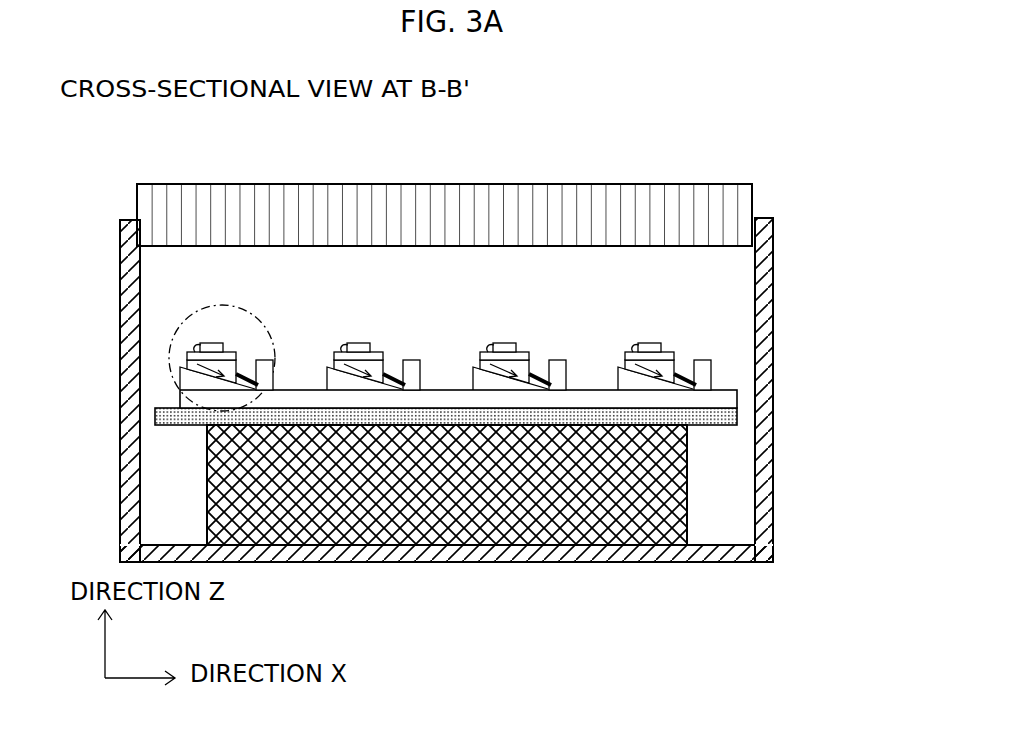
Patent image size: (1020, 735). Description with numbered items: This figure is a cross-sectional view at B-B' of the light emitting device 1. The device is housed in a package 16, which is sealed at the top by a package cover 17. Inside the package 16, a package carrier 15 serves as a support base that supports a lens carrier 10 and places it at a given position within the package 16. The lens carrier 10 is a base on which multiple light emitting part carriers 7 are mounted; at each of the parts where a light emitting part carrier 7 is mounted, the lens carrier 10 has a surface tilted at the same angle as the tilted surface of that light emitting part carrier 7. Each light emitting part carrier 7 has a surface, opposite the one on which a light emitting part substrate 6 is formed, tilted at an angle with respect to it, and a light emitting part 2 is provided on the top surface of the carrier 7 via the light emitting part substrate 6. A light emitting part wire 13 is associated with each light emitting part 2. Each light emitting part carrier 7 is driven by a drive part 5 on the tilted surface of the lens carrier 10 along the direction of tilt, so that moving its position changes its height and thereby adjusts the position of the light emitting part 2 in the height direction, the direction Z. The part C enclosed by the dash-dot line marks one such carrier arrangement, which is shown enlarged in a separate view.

The light emitting device 1 is at (530, 158).
The light emitting part 2 is at (360, 352).
The drive part 5 is at (421, 362).
The light emitting part substrate 6 is at (378, 358).
The light emitting part carrier 7 is at (392, 372).
The lens carrier 10 is at (196, 426).
The light emitting part wire 13 is at (346, 343).
The package carrier 15 is at (207, 498).
The package 16 is at (140, 304).
The package cover 17 is at (672, 184).
The part C is at (253, 313).